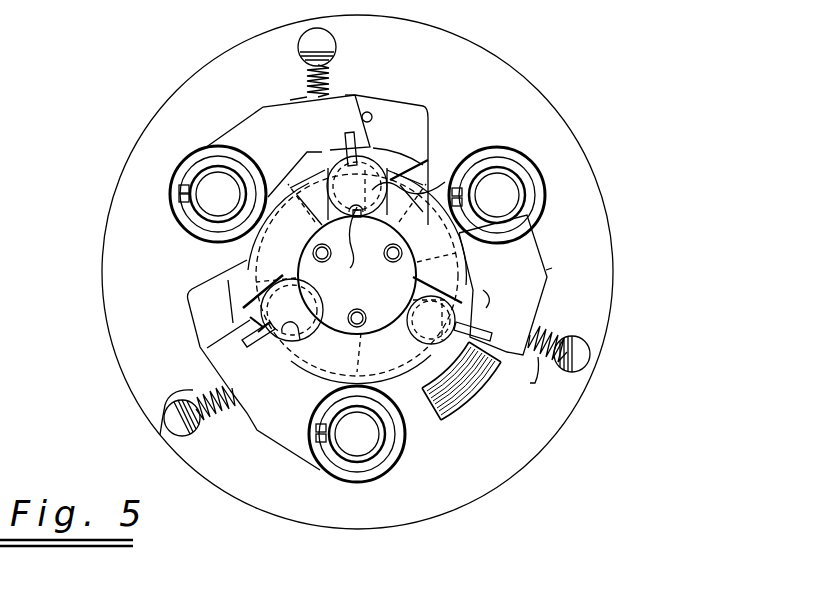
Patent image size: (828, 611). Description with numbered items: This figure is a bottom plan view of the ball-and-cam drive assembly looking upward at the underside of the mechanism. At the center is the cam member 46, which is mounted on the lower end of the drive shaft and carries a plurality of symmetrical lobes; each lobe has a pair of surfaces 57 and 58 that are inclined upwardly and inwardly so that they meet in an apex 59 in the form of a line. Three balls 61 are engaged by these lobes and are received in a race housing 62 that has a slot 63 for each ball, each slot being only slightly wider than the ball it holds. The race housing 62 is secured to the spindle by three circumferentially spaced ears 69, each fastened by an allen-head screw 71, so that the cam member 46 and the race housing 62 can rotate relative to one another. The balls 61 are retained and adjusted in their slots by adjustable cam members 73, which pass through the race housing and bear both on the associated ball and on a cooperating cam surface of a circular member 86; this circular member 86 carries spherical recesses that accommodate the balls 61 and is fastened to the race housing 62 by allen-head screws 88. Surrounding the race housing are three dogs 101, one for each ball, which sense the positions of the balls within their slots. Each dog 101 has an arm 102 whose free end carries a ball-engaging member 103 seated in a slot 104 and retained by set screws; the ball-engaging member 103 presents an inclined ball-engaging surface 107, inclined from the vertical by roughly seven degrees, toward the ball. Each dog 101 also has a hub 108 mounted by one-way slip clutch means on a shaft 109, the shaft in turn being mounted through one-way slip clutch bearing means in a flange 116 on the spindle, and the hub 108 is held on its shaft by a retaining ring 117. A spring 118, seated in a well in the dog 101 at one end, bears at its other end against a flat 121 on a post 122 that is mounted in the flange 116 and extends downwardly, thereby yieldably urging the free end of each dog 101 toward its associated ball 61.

The cam member 46 is at (253, 251).
The surface 57 is at (232, 281).
The surface 58 is at (245, 321).
The apex 59 is at (237, 300).
The ball 61 is at (438, 331).
The race housing 62 is at (426, 160).
The slot 63 is at (405, 190).
The ear 69 is at (398, 118).
The allen-head screw 71 is at (371, 114).
The adjustable cam member 73 is at (300, 305).
The circular member 86 is at (384, 300).
The allen-head screw 88 is at (370, 311).
The dog 101 is at (347, 93).
The arm 102 is at (285, 141).
The ball-engaging member 103 is at (382, 148).
The slot 104 is at (344, 143).
The inclined ball-engaging surface 107 is at (300, 342).
The hub 108 is at (188, 222).
The shaft 109 is at (510, 202).
The flange 116 is at (462, 477).
The retaining ring 117 is at (498, 162).
The spring 118 is at (165, 397).
The flat 121 is at (562, 333).
The post 122 is at (180, 426).